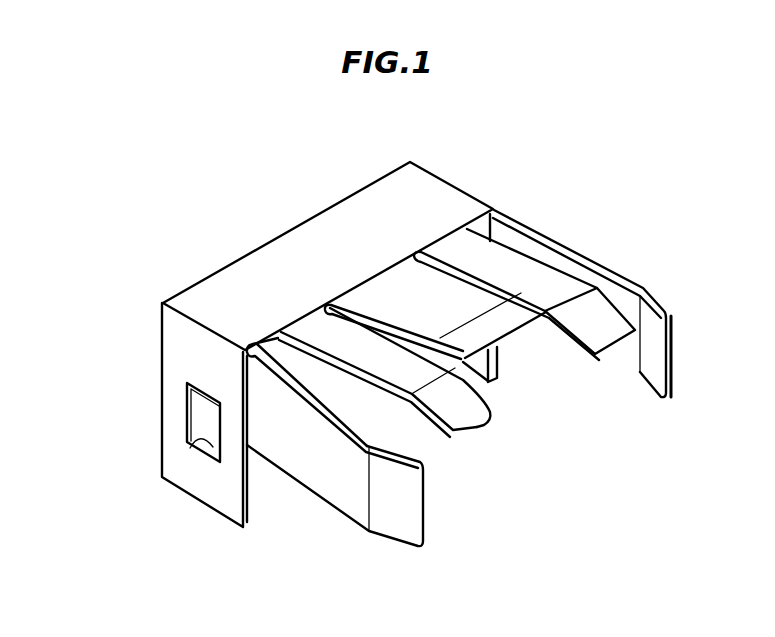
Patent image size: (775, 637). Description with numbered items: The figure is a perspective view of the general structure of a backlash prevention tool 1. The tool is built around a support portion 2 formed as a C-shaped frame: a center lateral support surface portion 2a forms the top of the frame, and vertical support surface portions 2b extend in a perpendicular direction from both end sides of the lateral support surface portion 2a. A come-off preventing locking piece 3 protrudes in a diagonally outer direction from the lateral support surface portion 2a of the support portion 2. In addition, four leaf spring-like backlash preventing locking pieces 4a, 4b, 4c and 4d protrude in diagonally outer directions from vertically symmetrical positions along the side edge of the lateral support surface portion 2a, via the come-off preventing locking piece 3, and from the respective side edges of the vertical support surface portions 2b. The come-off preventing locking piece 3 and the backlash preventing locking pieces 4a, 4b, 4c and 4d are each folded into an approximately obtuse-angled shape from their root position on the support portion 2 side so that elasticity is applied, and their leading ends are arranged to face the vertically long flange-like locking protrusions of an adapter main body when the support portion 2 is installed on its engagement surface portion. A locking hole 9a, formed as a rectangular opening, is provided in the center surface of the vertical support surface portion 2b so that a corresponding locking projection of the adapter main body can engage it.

The backlash prevention tool 1 is at (444, 170).
The support portion 2 is at (207, 268).
The lateral support surface portion 2a is at (357, 218).
The vertical support surface portion 2b is at (160, 396).
The come-off preventing locking piece 3 is at (476, 300).
The backlash preventing locking piece 4a is at (674, 311).
The backlash preventing locking piece 4b is at (605, 322).
The backlash preventing locking piece 4c is at (476, 421).
The backlash preventing locking piece 4d is at (398, 518).
The locking hole 9a is at (187, 446).